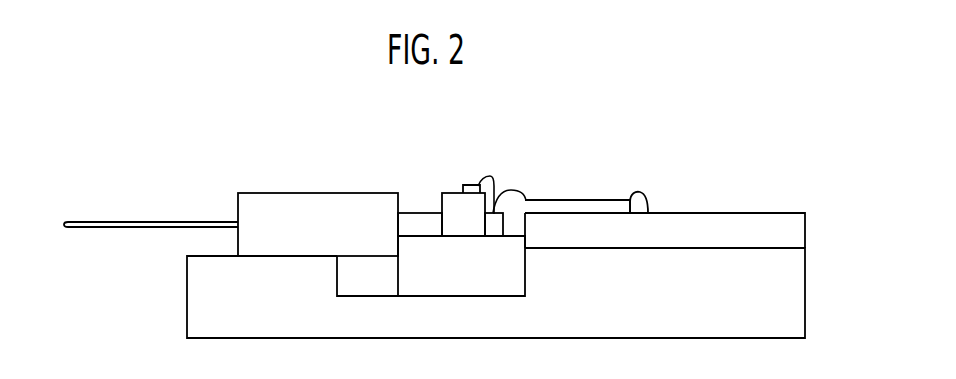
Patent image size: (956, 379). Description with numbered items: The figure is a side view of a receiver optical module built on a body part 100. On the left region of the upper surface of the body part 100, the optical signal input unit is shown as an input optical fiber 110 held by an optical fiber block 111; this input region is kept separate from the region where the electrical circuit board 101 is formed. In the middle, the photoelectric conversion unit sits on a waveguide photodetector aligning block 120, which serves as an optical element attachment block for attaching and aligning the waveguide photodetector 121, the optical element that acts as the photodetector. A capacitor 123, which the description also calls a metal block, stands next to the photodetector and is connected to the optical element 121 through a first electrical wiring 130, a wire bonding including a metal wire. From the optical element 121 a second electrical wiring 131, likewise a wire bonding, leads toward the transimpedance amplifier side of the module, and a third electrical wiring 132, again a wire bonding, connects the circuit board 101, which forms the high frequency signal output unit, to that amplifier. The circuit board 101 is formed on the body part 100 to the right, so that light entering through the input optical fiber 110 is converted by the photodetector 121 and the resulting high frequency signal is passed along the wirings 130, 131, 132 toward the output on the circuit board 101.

The body part 100 is at (191, 302).
The circuit board 101 is at (706, 222).
The input optical fiber 110 is at (153, 222).
The optical fiber block 111 is at (318, 196).
The waveguide photodetector aligning block 120 is at (453, 285).
The waveguide photodetector 121 is at (419, 218).
The capacitor 123 is at (468, 185).
The first electrical wiring 130 is at (482, 178).
The second electrical wiring 131 is at (523, 191).
The third electrical wiring 132 is at (640, 192).